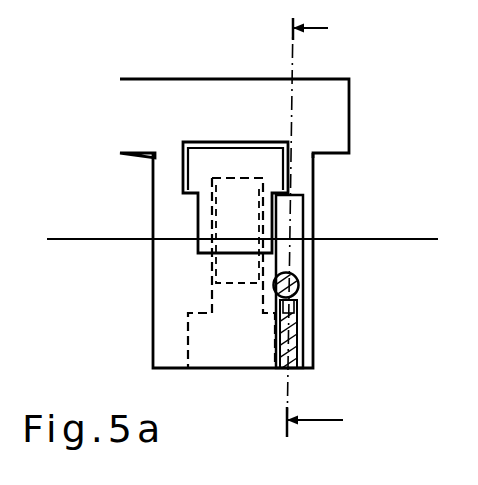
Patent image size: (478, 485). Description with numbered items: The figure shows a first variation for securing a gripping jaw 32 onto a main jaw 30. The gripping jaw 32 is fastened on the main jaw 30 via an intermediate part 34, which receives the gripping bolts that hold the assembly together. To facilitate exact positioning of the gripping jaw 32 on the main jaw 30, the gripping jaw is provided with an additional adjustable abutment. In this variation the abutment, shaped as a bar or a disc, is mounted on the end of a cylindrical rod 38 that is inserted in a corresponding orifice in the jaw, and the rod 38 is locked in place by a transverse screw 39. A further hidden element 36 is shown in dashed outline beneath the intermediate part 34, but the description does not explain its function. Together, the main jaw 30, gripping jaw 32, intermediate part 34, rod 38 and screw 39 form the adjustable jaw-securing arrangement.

The main jaw 30 is at (332, 103).
The gripping jaw 32 is at (165, 292).
The intermediate part 34 is at (277, 167).
The hidden pin / bore 36 is at (203, 343).
The cylindrical rod 38 is at (297, 277).
The transverse screw 39 is at (302, 337).